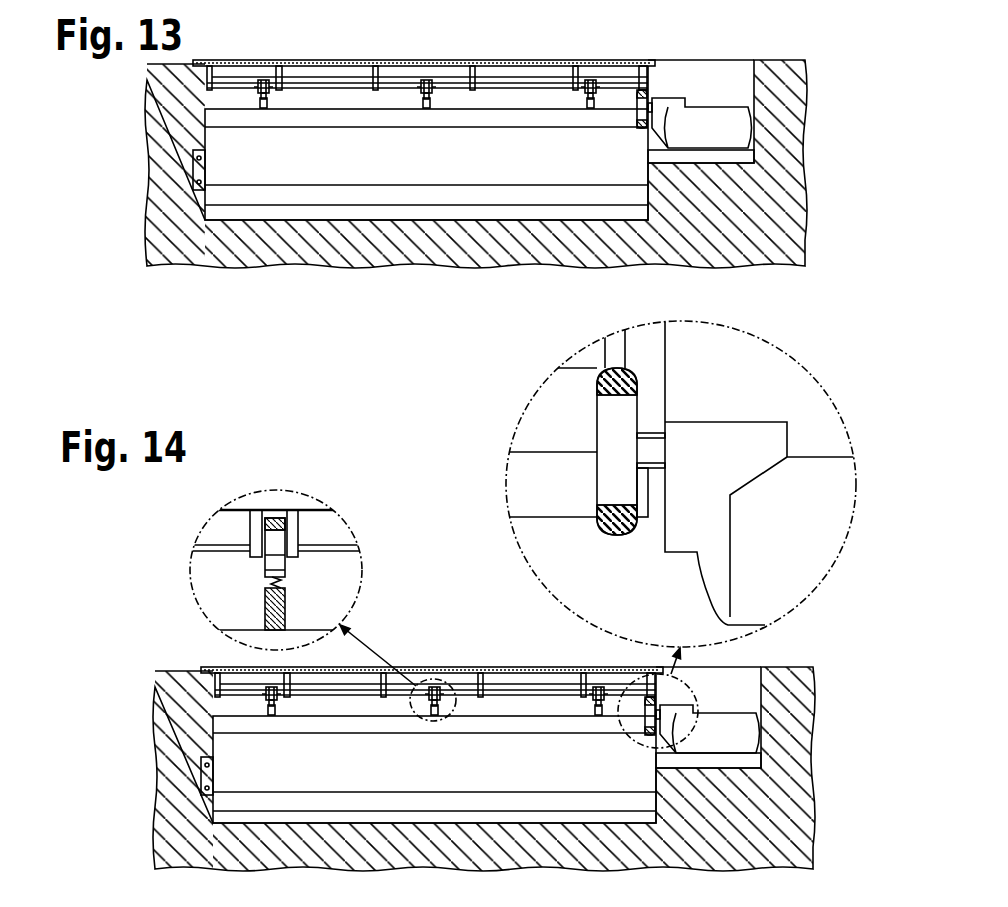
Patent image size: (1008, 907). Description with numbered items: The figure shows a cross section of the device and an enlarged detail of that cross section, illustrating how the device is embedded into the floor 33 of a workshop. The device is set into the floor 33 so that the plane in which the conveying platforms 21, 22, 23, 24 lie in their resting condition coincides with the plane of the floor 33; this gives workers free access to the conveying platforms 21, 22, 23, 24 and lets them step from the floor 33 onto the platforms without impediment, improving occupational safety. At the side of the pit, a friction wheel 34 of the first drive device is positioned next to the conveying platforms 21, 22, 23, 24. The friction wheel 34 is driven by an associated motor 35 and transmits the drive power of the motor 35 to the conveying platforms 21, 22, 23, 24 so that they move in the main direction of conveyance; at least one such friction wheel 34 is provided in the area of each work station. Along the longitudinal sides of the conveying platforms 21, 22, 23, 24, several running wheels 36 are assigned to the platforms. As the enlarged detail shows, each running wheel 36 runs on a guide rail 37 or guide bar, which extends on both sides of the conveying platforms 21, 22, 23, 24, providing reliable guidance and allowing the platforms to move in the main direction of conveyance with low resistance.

In FIG. 13, the conveying platform 21 is at (424, 39).
In FIG. 14, the conveying platform 21 is at (432, 499).
In FIG. 13, the conveying platform 22 is at (424, 39).
In FIG. 14, the conveying platform 22 is at (432, 499).
In FIG. 13, the conveying platform 23 is at (424, 39).
In FIG. 14, the conveying platform 23 is at (432, 499).
In FIG. 13, the conveying platform 24 is at (433, 62).
In FIG. 14, the conveying platform 24 is at (617, 353).
In FIG. 13, the floor 33 is at (187, 62).
In FIG. 14, the floor 33 is at (183, 672).
In FIG. 13, the friction wheel 34 is at (650, 93).
In FIG. 14, the friction wheel 34 is at (616, 422).
In FIG. 13, the motor 35 is at (700, 120).
In FIG. 14, the motor 35 is at (830, 475).
In FIG. 13, the running wheel 36 is at (270, 95).
In FIG. 14, the running wheel 36 is at (279, 560).
In FIG. 14, the guide rail 37 is at (265, 613).